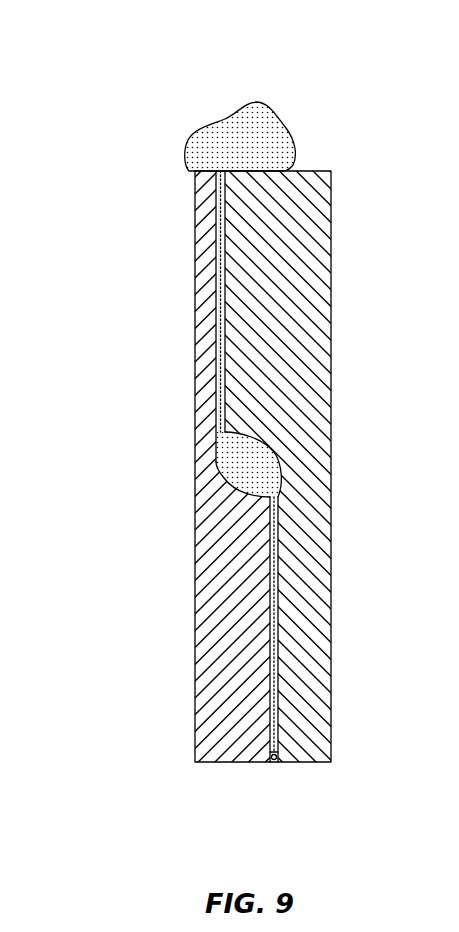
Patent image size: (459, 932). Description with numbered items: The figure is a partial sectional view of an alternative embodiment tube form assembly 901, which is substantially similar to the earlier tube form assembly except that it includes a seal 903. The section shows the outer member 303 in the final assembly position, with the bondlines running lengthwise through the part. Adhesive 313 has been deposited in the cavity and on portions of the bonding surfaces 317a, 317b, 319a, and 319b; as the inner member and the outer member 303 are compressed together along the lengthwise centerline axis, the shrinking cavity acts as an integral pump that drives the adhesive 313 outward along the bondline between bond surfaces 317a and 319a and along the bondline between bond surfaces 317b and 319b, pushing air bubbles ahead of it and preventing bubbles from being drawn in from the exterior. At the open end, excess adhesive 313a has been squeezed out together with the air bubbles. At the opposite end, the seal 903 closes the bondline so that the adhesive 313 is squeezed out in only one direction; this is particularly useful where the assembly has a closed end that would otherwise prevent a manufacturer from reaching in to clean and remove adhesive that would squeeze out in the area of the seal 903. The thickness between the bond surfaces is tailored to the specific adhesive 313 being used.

The tube form assembly 901 is at (253, 466).
The outer member 303 is at (195, 627).
The adhesive 313 is at (230, 467).
The excess adhesive 313a is at (250, 124).
The bonding surface 317a is at (271, 552).
The bonding surface 317b is at (218, 316).
The bonding surface 319a is at (276, 720).
The bonding surface 319b is at (225, 227).
The seal 903 is at (270, 760).